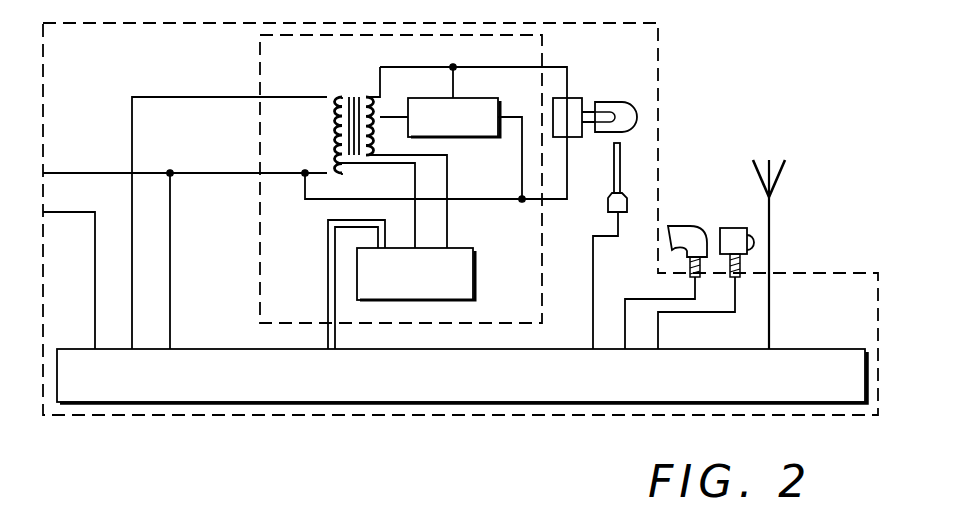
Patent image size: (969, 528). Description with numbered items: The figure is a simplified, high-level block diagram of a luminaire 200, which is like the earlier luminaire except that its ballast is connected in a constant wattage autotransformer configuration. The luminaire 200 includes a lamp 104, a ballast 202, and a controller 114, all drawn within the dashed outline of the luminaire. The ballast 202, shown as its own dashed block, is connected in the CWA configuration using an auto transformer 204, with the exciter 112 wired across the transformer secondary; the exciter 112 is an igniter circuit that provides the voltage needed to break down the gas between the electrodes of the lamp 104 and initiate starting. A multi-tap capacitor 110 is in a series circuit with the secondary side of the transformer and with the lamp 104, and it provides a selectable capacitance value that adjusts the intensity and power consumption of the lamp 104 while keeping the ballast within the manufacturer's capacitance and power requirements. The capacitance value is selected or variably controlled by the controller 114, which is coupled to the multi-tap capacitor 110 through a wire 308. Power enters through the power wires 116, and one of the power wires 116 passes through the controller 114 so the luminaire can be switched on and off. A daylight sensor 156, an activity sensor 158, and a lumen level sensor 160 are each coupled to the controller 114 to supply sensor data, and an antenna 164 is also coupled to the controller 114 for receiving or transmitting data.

The luminaire 200 is at (718, 58).
The ballast 202 is at (258, 62).
The auto transformer 204 is at (354, 94).
The exciter 112 is at (485, 100).
The lamp 104 is at (613, 93).
The multi-tap capacitor 110 is at (478, 272).
The controller 114 is at (820, 348).
The power wires 116 is at (60, 172).
The daylight sensor 156 is at (684, 224).
The activity sensor 158 is at (735, 227).
The lumen level sensor 160 is at (607, 205).
The antenna 164 is at (780, 164).
The wire 308 is at (327, 252).